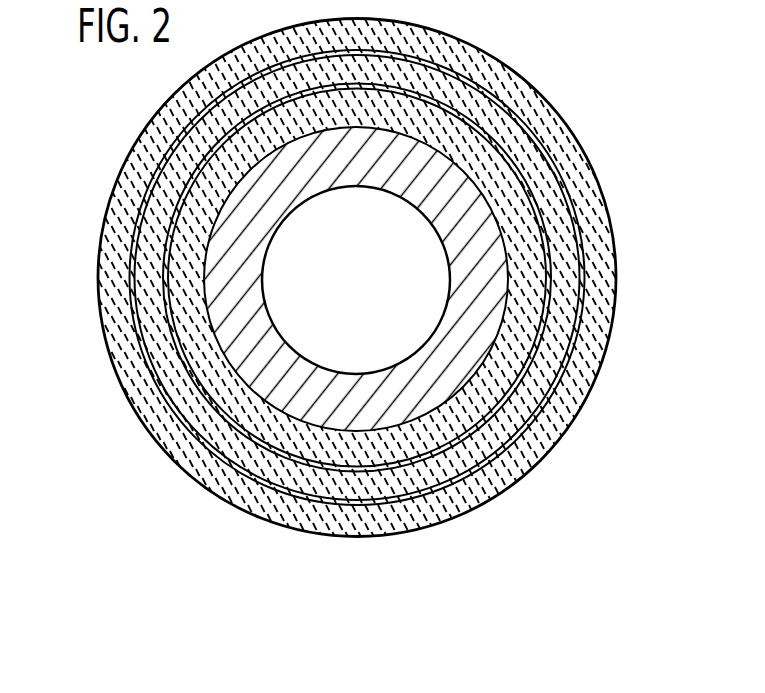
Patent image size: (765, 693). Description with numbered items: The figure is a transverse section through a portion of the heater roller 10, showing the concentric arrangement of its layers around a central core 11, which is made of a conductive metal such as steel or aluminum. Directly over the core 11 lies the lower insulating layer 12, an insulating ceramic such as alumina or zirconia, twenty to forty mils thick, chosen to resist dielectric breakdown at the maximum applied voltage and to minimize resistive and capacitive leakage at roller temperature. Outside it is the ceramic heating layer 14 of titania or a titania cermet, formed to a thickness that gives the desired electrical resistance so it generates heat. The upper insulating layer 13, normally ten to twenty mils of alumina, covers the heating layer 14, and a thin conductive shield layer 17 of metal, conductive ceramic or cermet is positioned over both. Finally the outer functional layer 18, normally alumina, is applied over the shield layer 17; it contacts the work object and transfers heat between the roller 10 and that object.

The heater roller 10 is at (578, 128).
The core 11 is at (266, 253).
The lower insulating layer 12 is at (182, 283).
The upper insulating layer 13 is at (163, 195).
The ceramic heating layer 14 is at (165, 242).
The conductive shield layer 17 is at (158, 150).
The outer functional layer 18 is at (177, 108).